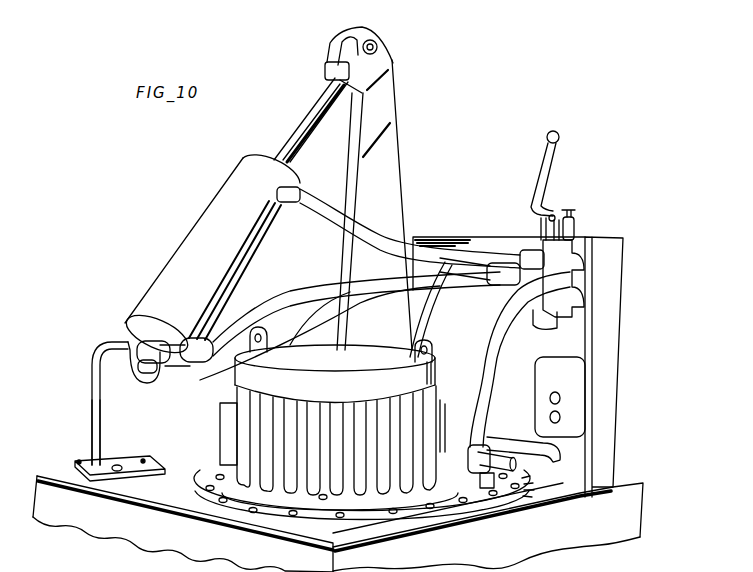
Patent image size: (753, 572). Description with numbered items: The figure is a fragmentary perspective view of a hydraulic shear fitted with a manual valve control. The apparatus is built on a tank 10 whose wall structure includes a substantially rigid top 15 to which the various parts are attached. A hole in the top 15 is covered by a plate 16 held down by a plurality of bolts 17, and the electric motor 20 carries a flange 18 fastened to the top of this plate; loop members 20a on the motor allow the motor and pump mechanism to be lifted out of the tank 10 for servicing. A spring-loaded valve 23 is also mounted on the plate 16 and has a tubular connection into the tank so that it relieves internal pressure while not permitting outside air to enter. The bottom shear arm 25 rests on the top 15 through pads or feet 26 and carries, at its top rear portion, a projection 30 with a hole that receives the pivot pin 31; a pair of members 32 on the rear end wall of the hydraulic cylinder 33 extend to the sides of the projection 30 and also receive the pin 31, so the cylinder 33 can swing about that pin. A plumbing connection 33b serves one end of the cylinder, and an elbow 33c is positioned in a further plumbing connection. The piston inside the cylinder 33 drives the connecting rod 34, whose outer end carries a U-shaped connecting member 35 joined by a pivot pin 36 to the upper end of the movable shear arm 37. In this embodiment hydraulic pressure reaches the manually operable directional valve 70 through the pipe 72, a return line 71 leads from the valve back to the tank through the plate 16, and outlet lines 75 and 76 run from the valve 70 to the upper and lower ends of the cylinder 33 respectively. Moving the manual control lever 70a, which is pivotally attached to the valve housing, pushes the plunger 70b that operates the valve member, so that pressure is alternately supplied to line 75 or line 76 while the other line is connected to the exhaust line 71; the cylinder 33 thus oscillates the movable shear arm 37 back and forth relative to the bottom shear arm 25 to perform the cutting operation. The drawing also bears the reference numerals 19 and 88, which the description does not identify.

The tank 10 is at (623, 513).
The top 15 is at (70, 474).
The plate 16 is at (478, 488).
The bolts 17 is at (393, 512).
The flange 18 is at (240, 507).
The bolt 19 is at (323, 499).
The electric motor 20 is at (233, 393).
The loop members 20a is at (266, 326).
The spring-loaded valve 23 is at (490, 457).
The bottom shear arm 25 is at (107, 430).
The pad or foot 26 is at (140, 477).
The projection 30 is at (118, 358).
The pivot pin 31 is at (157, 375).
The members 32 is at (133, 377).
The hydraulic cylinder 33 is at (190, 253).
The plumbing connection 33b is at (143, 318).
The elbow 33c is at (200, 318).
The connecting rod 34 is at (305, 123).
The U-shaped connecting member 35 is at (325, 57).
The pivot pin 36 is at (378, 46).
The movable shear arm 37 is at (387, 165).
The manually operable directional valve 70 is at (553, 253).
The manual control lever 70a is at (548, 168).
The plunger 70b is at (535, 230).
The return line 71 is at (498, 340).
The pipe 72 is at (418, 313).
The outlet line 75 is at (327, 220).
The outlet line 76 is at (243, 322).
The bracket 88 is at (607, 347).